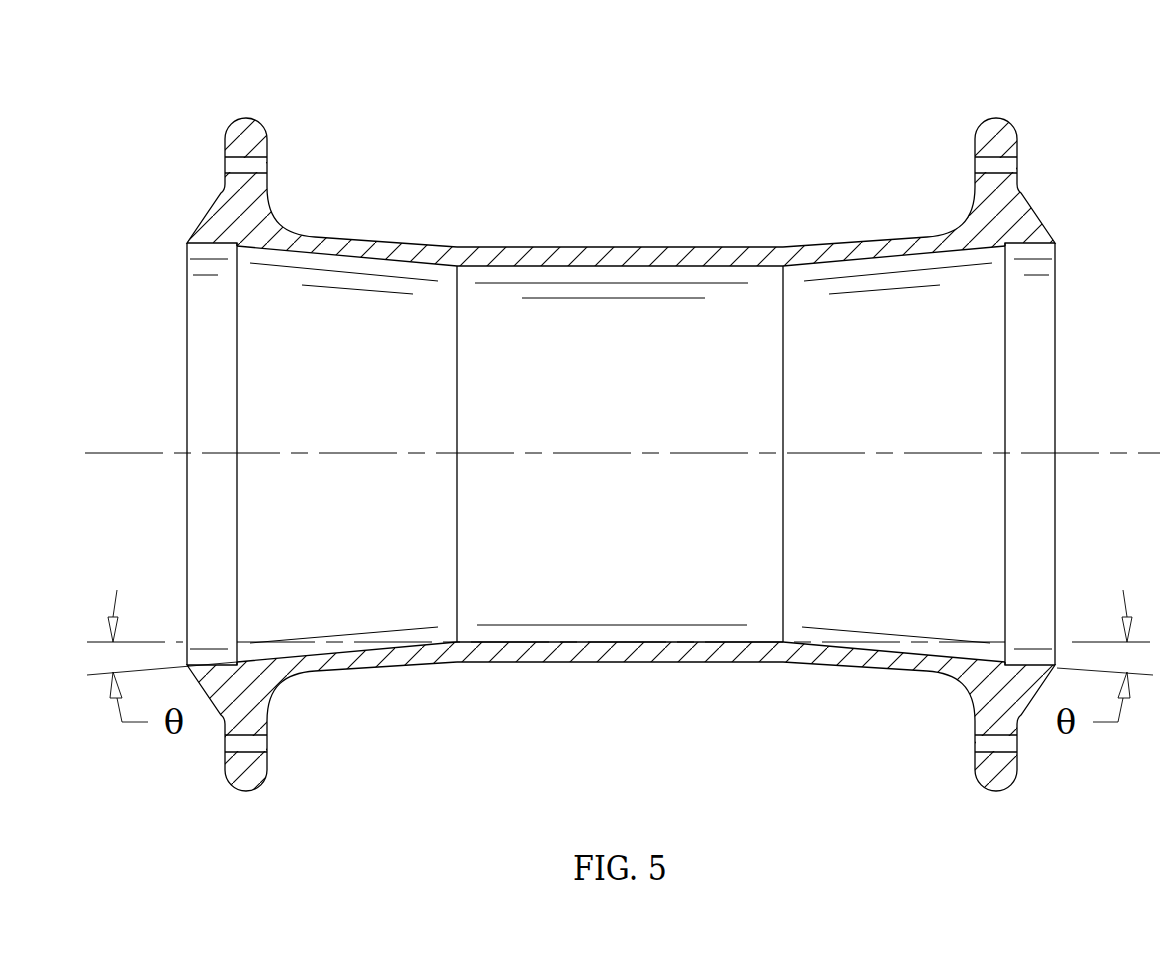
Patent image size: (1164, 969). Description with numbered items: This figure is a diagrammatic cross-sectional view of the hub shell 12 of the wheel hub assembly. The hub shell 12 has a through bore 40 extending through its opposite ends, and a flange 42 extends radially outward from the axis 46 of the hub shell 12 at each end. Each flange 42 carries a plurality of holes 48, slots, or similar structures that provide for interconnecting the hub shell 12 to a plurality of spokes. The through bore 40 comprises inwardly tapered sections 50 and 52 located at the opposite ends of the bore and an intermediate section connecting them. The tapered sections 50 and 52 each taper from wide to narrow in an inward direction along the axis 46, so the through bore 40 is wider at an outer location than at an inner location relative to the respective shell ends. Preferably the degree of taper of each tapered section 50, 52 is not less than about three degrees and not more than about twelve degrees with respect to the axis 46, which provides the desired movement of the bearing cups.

The hub shell 12 is at (580, 258).
The through bore 40 is at (745, 305).
The flange 42 is at (230, 124).
The axis 46 is at (643, 453).
The holes 48 is at (227, 162).
The tapered section 50 is at (892, 260).
The tapered section 52 is at (372, 258).